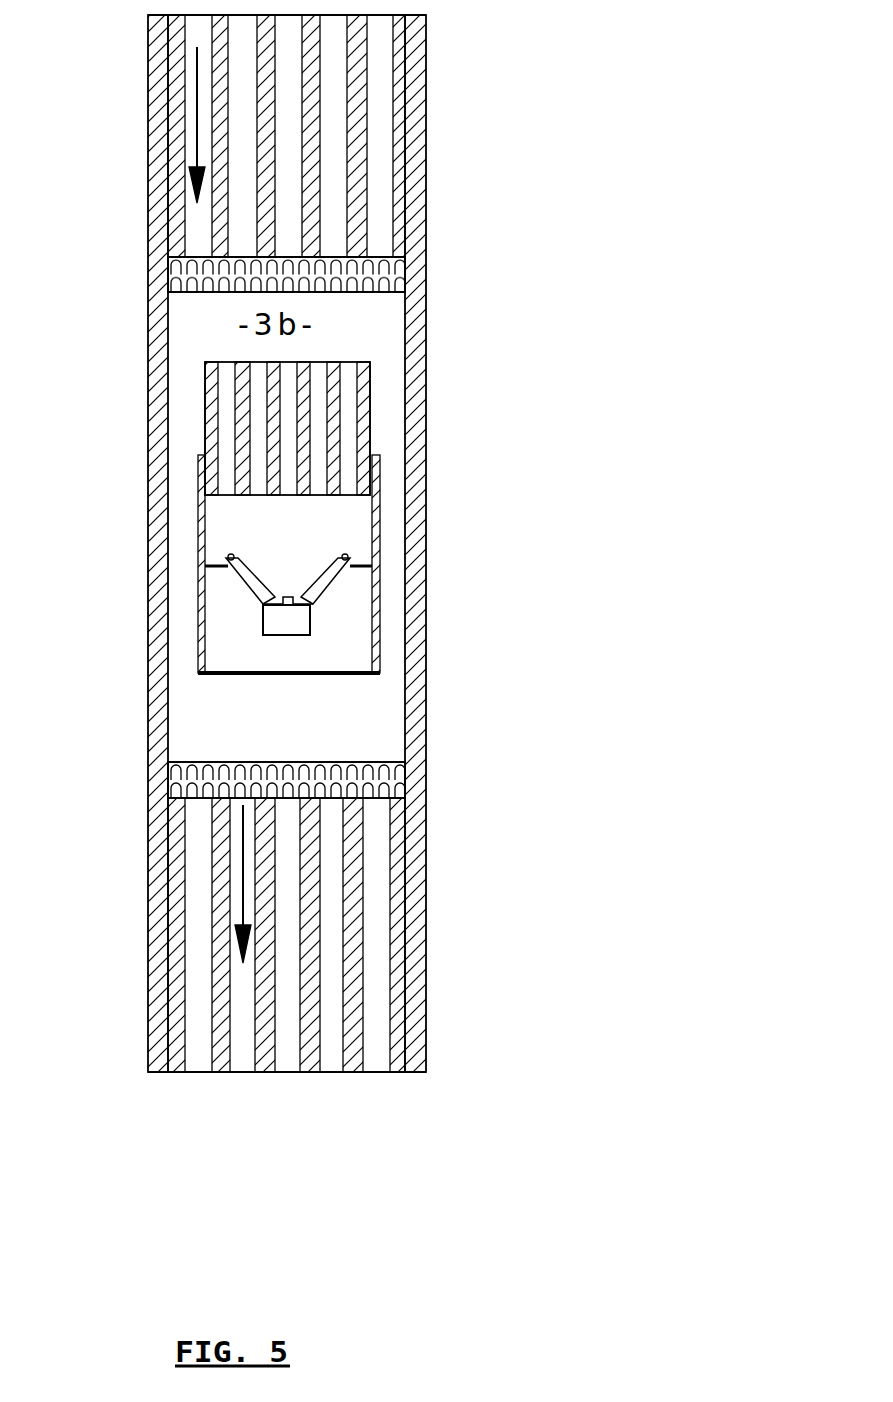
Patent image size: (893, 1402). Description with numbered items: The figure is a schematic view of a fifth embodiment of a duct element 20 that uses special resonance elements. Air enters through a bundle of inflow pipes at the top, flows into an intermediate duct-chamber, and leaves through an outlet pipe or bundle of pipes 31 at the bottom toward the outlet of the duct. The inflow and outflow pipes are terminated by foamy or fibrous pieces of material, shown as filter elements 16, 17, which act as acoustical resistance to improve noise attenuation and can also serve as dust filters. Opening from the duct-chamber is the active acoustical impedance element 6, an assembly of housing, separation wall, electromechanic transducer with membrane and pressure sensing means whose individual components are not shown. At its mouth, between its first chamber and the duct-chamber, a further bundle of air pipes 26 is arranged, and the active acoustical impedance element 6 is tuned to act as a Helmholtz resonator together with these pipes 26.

The duct element 20 is at (150, 803).
The filter element 16 is at (202, 273).
The bundle of air pipes 26 is at (347, 412).
The active acoustical impedance element 6 is at (357, 645).
The filter element 17 is at (222, 775).
The outlet pipe or bundle of pipes 31 is at (373, 863).